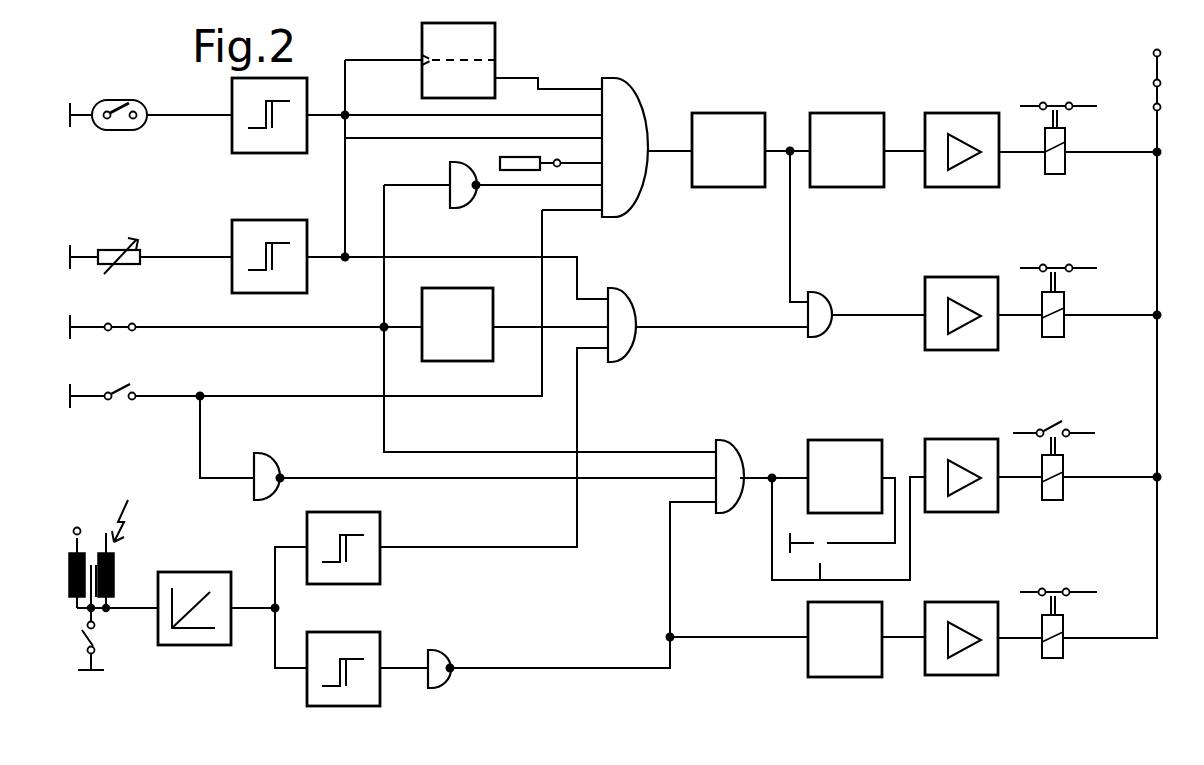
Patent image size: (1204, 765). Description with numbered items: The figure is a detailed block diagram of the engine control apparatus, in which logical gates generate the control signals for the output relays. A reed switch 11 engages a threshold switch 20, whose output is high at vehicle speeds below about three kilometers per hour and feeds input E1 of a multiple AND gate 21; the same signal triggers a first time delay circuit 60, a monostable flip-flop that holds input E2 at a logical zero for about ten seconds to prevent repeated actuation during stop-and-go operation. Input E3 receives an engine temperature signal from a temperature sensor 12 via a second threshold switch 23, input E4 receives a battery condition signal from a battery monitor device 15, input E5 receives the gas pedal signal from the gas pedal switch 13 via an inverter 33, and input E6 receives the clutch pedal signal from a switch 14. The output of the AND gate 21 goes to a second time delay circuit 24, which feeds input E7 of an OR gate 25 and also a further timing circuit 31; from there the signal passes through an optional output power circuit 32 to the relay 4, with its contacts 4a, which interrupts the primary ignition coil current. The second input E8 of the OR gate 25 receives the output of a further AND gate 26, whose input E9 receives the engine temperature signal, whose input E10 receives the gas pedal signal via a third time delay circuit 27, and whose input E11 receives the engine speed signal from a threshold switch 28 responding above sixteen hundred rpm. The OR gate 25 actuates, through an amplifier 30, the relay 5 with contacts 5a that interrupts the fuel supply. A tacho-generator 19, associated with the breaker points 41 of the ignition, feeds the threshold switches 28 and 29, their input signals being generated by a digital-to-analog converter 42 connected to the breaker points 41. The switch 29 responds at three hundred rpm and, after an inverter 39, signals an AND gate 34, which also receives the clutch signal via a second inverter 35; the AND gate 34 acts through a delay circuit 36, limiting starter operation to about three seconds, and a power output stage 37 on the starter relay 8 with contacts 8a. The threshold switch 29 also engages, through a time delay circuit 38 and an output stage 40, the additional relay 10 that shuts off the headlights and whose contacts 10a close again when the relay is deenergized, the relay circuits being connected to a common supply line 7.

The reed switch 11 is at (138, 102).
The threshold switch 20 is at (242, 128).
The time delay circuit 60 is at (482, 50).
The multiple AND gate 21 is at (632, 102).
The battery monitor device 15 is at (508, 162).
The inverter 33 is at (462, 188).
The second time delay circuit 24 is at (722, 130).
The timing circuit 31 is at (838, 128).
The output power circuit 32 is at (938, 126).
The contact 4a is at (1052, 102).
The relay 4 is at (1052, 166).
The supply line 7 is at (1153, 96).
The temperature sensor 12 is at (140, 254).
The second threshold switch 23 is at (294, 280).
The gas pedal switch 13 is at (124, 322).
The clutch pedal switch 14 is at (122, 400).
The third time delay circuit 27 is at (484, 346).
The AND gate 26 is at (626, 340).
The OR gate 25 is at (828, 314).
The amplifier 30 is at (962, 282).
The contact 5a is at (1052, 264).
The relay 5 is at (1060, 328).
The AND gate 34 is at (726, 462).
The delay circuit 36 is at (832, 440).
The power output stage 37 is at (948, 452).
The contact 8a is at (1046, 426).
The starter relay 8 is at (1056, 488).
The second inverter 35 is at (268, 472).
The threshold switch 28 is at (370, 540).
The threshold switch 29 is at (370, 640).
The inverter 39 is at (440, 676).
The tacho-generator 19 is at (130, 578).
The breaker points 41 is at (96, 634).
The digital-to-analog converter 42 is at (204, 640).
The timing stage T6 38 is at (820, 652).
The contacts 10a is at (1054, 588).
The relay 10 is at (1056, 648).
The amplifier 40 is at (976, 664).
The input E1 is at (598, 113).
The input E2 is at (600, 88).
The input E3 is at (598, 136).
The input E4 is at (598, 162).
The input E5 is at (599, 184).
The input E6 is at (599, 212).
The input E7 is at (806, 302).
The input E8 is at (806, 330).
The input E9 is at (606, 296).
The input E10 is at (606, 322).
The input E11 is at (606, 350).